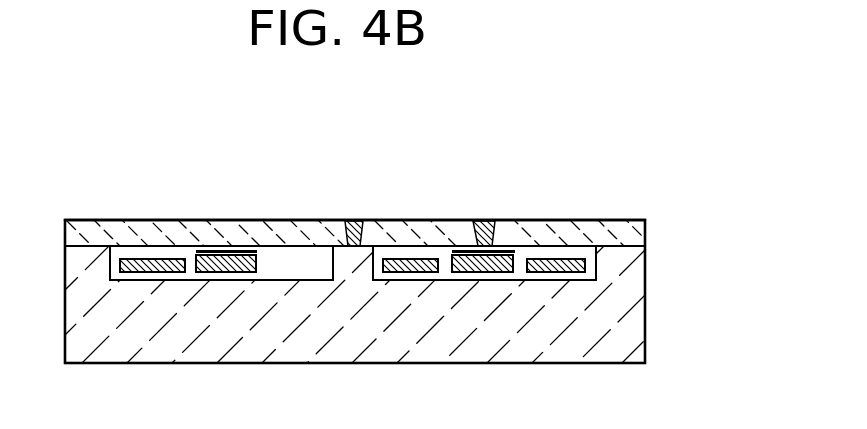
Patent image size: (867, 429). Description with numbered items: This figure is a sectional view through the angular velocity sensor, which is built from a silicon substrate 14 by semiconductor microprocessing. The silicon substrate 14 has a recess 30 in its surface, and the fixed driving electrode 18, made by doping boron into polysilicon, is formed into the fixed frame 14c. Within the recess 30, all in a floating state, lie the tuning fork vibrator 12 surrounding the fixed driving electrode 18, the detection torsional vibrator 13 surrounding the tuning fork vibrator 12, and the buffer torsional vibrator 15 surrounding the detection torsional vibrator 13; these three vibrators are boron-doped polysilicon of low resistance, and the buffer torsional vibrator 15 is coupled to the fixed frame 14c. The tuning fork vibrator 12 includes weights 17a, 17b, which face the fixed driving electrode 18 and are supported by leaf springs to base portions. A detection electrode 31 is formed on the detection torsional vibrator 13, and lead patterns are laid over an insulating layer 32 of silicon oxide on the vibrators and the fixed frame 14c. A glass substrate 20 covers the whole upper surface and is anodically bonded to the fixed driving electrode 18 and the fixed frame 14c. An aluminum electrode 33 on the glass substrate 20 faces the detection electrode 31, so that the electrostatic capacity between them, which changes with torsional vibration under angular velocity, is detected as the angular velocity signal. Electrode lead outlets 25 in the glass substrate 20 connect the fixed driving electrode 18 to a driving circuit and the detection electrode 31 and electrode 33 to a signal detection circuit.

The tuning fork vibrator 12 is at (302, 262).
The detection torsional vibrator 13 is at (243, 272).
The silicon substrate 14 is at (622, 338).
The fixed frame 14c is at (638, 257).
The buffer torsional vibrator 15 is at (137, 257).
The weight 17a is at (285, 255).
The weight 17b is at (385, 255).
The fixed driving electrode 18 is at (353, 262).
The glass substrate 20 is at (626, 235).
The electrode lead outlet 25 is at (356, 221).
The recess 30 is at (140, 275).
The detection electrode 31 is at (190, 250).
The insulating layer 32 is at (216, 273).
The electrode 33 is at (223, 253).